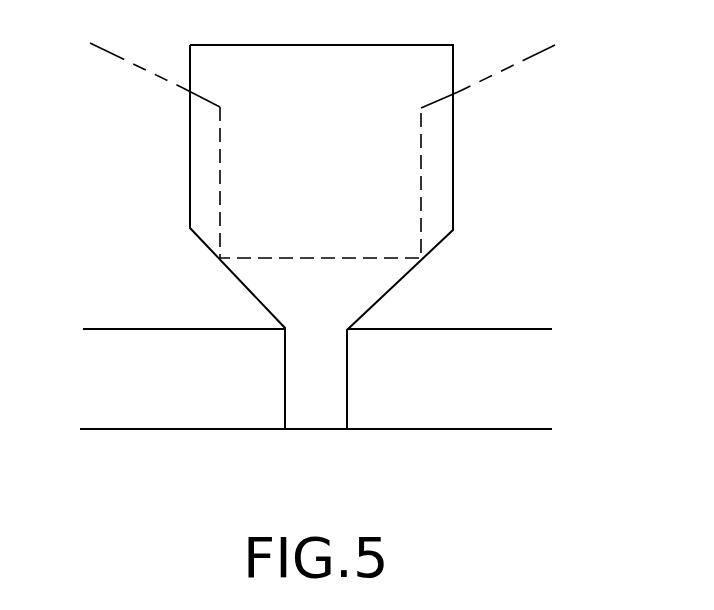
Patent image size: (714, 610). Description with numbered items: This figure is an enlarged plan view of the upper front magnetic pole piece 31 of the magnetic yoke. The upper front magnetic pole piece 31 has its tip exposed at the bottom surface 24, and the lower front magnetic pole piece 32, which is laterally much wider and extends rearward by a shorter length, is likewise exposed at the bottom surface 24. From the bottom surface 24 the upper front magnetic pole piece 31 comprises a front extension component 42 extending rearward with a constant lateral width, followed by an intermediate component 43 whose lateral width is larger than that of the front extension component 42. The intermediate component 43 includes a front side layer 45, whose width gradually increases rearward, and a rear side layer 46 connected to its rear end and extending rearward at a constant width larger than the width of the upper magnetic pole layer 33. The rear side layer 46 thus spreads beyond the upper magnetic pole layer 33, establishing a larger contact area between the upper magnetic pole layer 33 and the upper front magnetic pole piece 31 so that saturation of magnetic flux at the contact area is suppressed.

The bottom surface 24 is at (490, 431).
The upper front magnetic pole piece 31 is at (176, 216).
The lower front magnetic pole piece 32 is at (184, 327).
The upper magnetic pole layer 33 is at (531, 57).
The front extension component 42 is at (365, 330).
The intermediate component 43 is at (554, 118).
The front side layer 45 is at (473, 230).
The rear side layer 46 is at (473, 47).